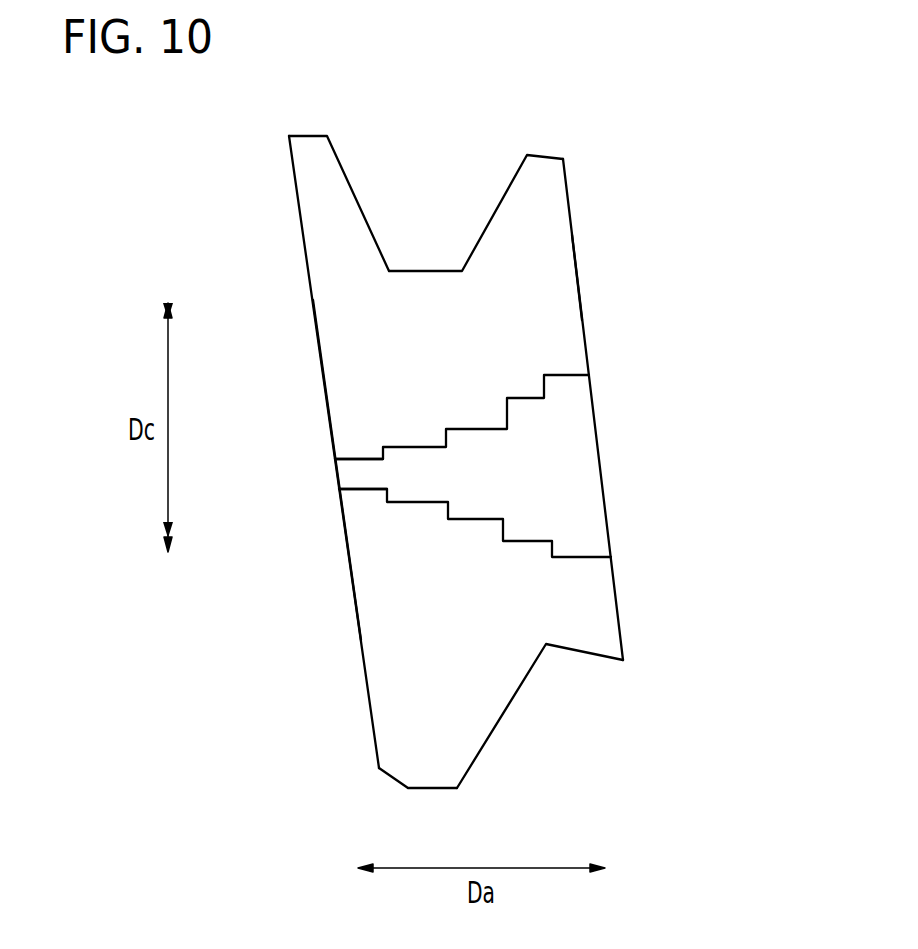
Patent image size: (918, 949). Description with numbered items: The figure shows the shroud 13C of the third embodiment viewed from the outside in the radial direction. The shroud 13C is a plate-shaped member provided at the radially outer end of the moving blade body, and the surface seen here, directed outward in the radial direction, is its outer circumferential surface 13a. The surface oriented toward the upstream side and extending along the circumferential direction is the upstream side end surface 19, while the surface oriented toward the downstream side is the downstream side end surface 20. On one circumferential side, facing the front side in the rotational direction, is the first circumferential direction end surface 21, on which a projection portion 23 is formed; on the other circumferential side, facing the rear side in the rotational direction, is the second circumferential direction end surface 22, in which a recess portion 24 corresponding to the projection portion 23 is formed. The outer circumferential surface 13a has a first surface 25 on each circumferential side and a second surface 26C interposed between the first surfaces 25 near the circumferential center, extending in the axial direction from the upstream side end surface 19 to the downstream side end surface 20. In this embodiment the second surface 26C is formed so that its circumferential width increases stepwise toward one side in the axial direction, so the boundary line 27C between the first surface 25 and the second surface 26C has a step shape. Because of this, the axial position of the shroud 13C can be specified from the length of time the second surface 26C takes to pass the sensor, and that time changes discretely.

The shroud 13C is at (612, 172).
The recess portion 24 is at (347, 178).
The second circumferential direction end surface 22 is at (538, 155).
The upstream side end surface 19 is at (303, 242).
The downstream side end surface 20 is at (587, 347).
The outer circumferential surface 13a is at (552, 280).
The first surface 25 is at (363, 334).
The boundary line 27C is at (522, 398).
The second surface 26C is at (372, 472).
The first circumferential direction end surface 21 is at (590, 655).
The projection portion 23 is at (447, 760).